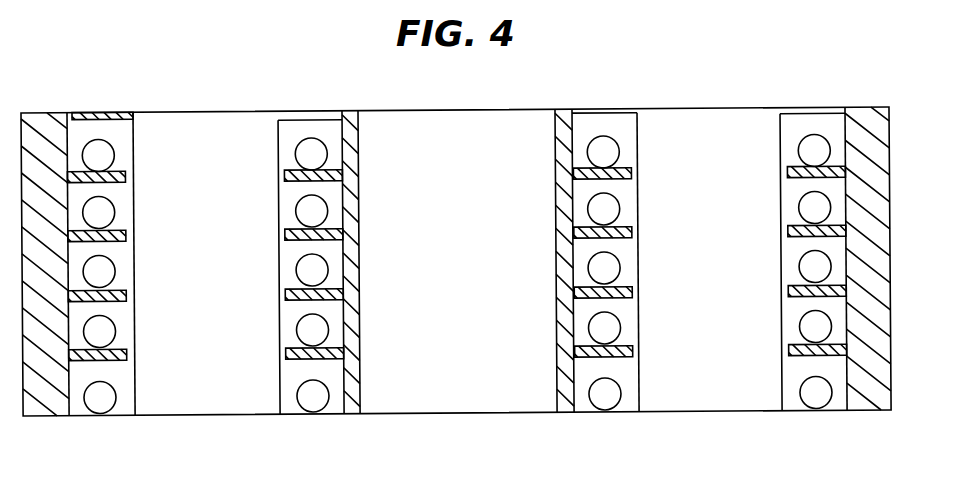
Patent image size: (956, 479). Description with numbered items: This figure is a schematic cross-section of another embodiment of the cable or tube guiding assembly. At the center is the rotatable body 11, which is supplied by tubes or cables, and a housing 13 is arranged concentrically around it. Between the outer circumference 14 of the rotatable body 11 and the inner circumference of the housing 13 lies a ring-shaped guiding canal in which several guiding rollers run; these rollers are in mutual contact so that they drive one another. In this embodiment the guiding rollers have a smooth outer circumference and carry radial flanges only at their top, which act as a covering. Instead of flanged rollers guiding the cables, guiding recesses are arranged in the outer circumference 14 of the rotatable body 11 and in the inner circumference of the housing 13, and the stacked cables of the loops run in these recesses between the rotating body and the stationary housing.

The rotatable body 11 is at (404, 129).
The housing 13 is at (860, 386).
The outer circumference of the rotatable body 14 is at (334, 140).